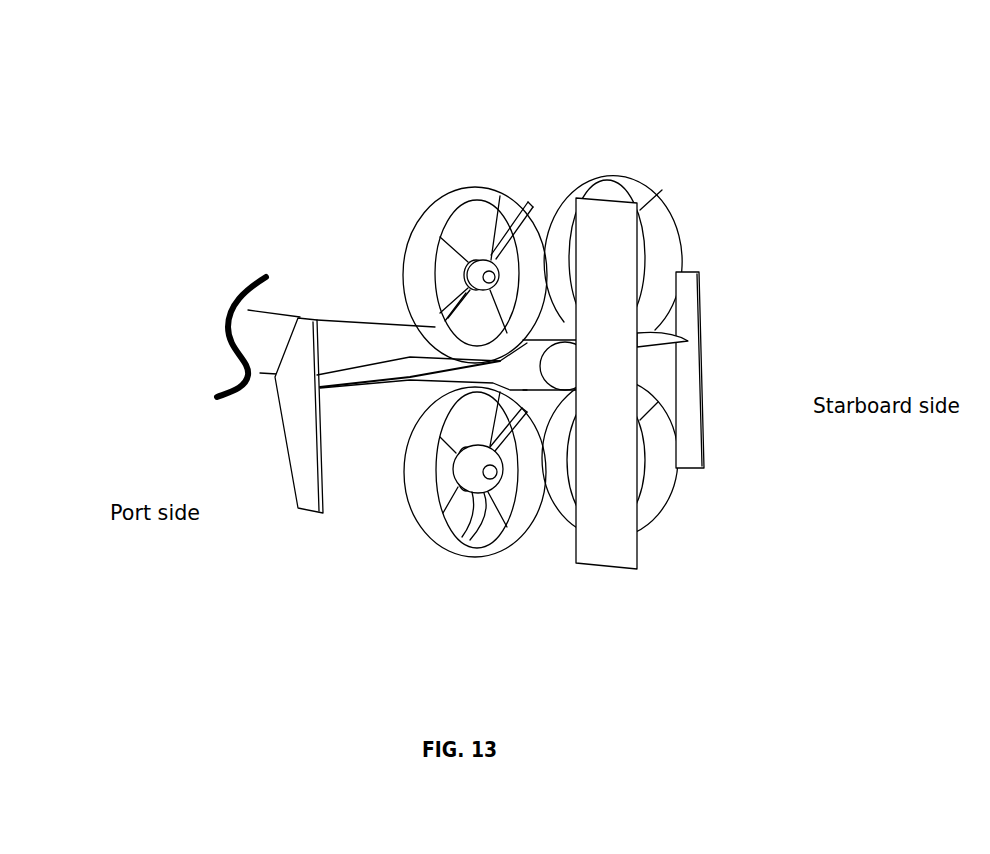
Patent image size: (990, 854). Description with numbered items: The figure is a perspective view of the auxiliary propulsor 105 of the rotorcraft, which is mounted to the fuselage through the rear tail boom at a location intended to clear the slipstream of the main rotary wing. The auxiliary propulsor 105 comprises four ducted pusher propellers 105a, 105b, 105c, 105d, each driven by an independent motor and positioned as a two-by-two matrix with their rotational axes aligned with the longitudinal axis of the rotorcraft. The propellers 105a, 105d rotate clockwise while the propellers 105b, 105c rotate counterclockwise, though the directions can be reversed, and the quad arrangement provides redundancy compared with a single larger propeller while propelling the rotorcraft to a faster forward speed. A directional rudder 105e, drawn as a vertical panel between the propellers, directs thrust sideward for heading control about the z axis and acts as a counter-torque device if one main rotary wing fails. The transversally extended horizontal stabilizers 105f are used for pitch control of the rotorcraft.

The auxiliary propulsor 105 is at (511, 360).
The pusher propeller 105a is at (422, 205).
The pusher propeller 105b is at (672, 212).
The pusher propeller 105c is at (407, 502).
The pusher propeller 105d is at (652, 522).
The directional rudder 105e is at (623, 570).
The horizontal stabilizer 105f is at (400, 357).